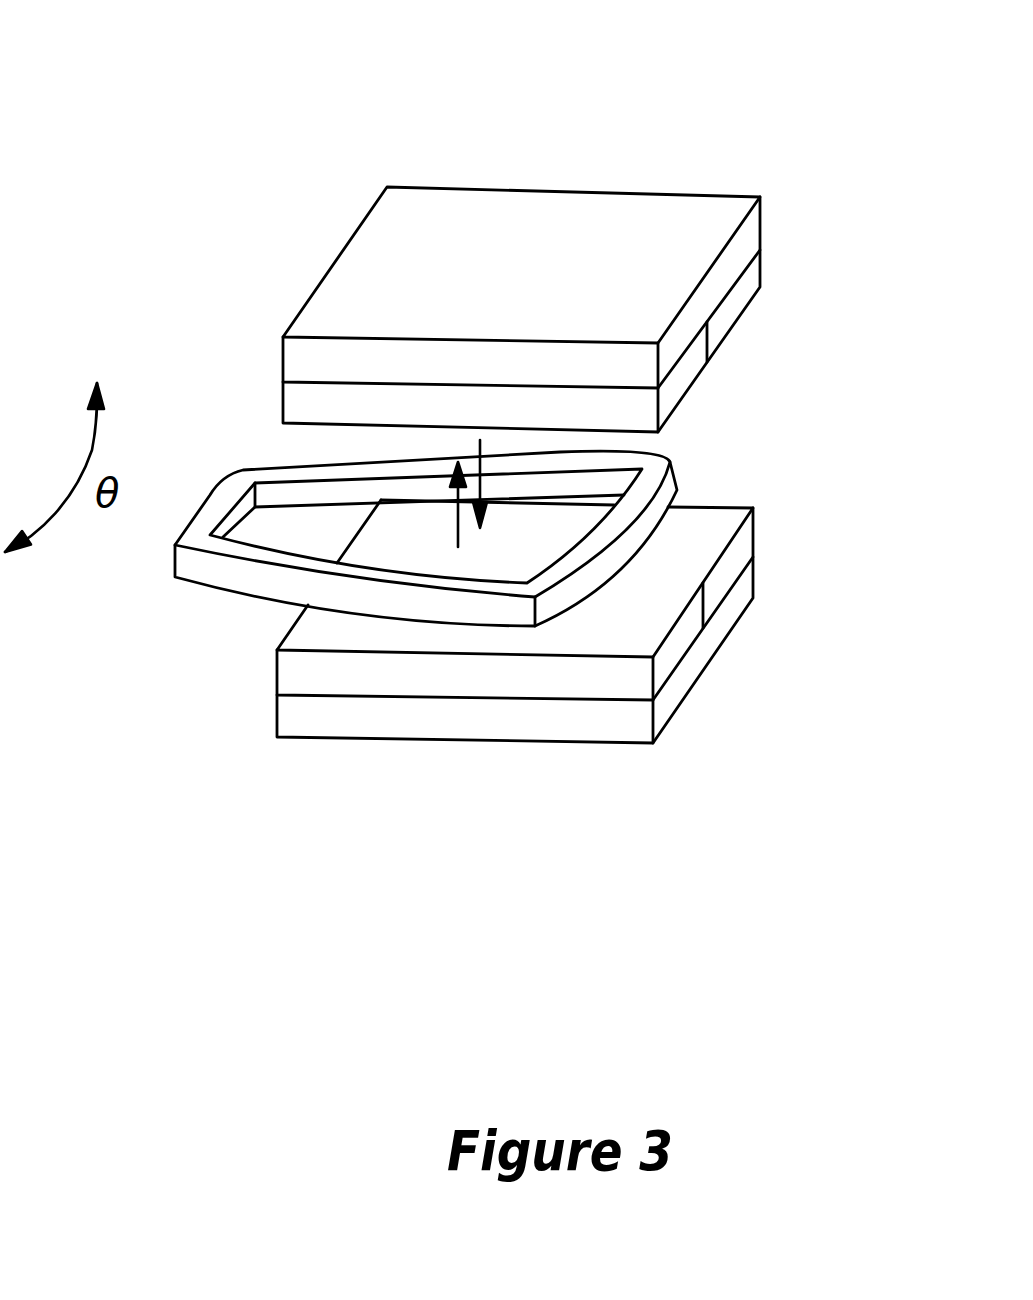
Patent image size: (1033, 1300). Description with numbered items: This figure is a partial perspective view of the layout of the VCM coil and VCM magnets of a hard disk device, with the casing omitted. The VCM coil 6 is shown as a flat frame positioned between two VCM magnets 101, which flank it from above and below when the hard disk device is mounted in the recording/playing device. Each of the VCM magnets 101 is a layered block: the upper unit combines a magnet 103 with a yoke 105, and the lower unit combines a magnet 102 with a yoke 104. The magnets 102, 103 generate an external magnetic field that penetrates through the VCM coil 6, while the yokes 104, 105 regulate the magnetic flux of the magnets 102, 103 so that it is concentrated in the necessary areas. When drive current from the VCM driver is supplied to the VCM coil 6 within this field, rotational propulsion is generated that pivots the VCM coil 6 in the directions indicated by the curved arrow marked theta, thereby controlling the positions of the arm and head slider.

The VCM magnets 101 is at (586, 465).
The yoke 105 is at (760, 221).
The magnet 103 is at (760, 268).
The magnet 102 is at (755, 540).
The yoke 104 is at (718, 627).
The VCM coil 6 is at (673, 456).